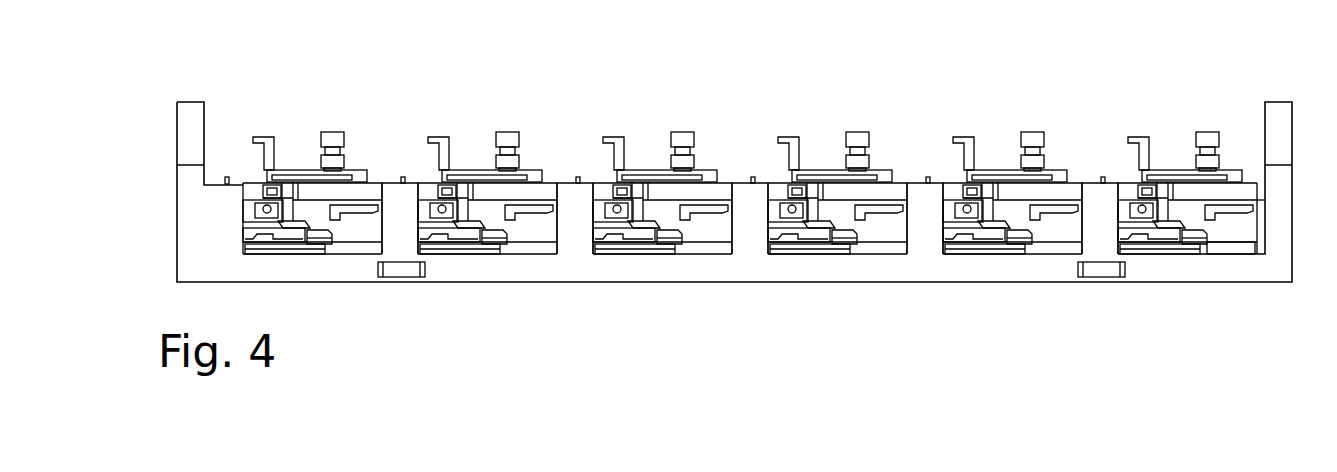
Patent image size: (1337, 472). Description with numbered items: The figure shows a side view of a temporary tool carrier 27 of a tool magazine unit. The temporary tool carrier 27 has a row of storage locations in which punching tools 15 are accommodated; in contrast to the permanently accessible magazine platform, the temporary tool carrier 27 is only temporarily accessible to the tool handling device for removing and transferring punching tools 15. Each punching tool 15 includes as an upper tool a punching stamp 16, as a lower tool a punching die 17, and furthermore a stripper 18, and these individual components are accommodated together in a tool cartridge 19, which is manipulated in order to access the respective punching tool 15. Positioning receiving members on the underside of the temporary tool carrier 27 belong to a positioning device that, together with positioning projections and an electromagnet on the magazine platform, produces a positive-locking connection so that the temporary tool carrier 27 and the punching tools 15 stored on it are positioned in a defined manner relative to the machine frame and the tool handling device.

The punching tool 15 is at (472, 189).
The punching stamp 16 is at (511, 134).
The punching die 17 is at (483, 245).
The stripper 18 is at (536, 214).
The tool cartridge 19 is at (436, 146).
The temporary tool carrier 27 is at (170, 149).